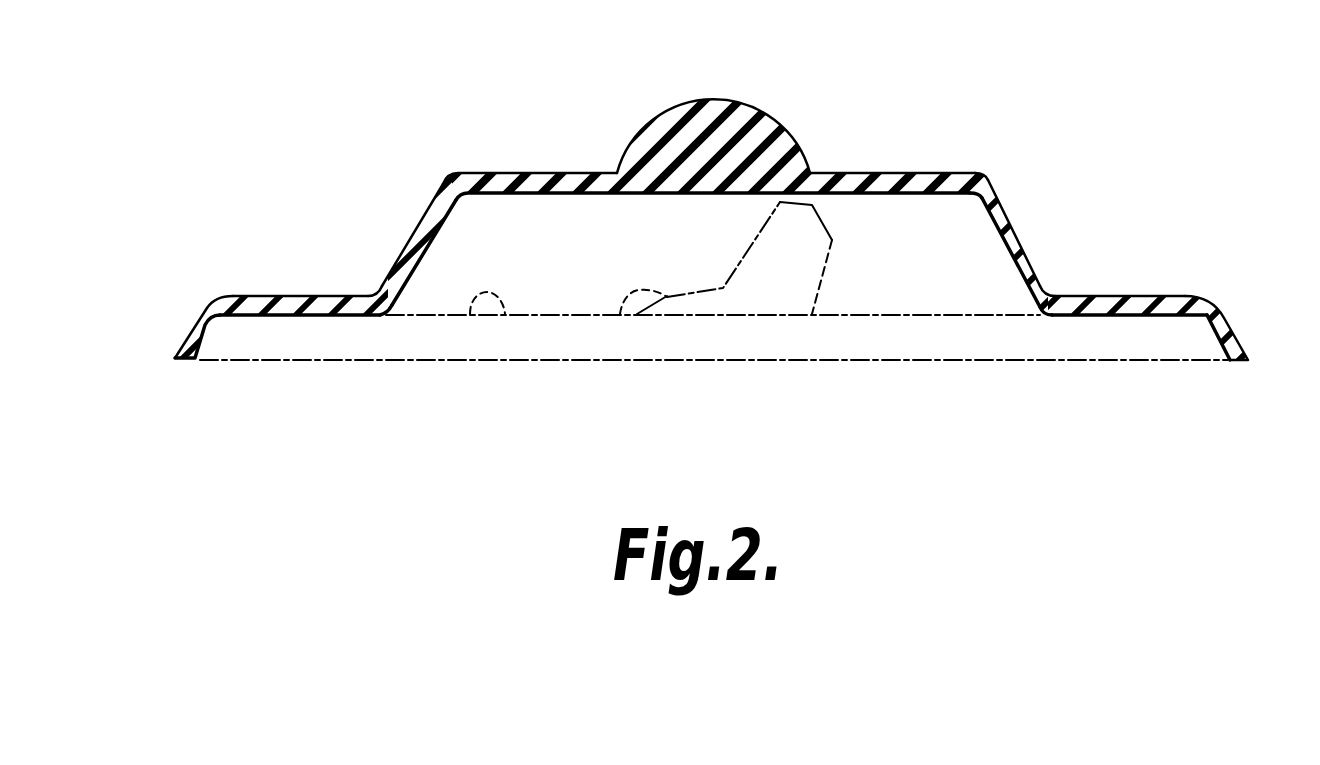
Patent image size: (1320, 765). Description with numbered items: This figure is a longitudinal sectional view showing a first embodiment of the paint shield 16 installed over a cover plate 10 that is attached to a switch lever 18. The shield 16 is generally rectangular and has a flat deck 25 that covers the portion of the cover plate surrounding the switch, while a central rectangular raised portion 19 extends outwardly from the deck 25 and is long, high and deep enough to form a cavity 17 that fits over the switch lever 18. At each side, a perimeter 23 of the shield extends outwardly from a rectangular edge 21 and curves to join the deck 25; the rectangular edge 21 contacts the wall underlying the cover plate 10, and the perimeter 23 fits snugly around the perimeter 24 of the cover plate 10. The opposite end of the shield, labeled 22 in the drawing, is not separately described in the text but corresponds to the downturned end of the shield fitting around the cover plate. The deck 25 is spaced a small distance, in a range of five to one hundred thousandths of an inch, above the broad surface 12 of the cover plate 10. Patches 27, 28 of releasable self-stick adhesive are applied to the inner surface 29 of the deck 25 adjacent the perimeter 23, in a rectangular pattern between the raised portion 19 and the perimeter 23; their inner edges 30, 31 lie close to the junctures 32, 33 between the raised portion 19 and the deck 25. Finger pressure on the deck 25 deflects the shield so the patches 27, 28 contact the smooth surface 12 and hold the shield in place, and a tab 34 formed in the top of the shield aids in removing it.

The cover plate 10 is at (805, 330).
The broad rectangular surface 12 is at (470, 315).
The shield 16 is at (543, 173).
The cavity 17 is at (925, 213).
The switch lever 18 is at (620, 315).
The central rectangular raised portion 19 is at (950, 172).
The rectangular edge 21 is at (413, 227).
The left end 22 is at (190, 334).
The perimeter 23 is at (1240, 340).
The perimeter of cover plate 24 is at (1206, 347).
The flat deck 25 is at (1128, 296).
The adhesive patch 27 is at (316, 316).
The adhesive patch 28 is at (1125, 317).
The inner surface 29 is at (262, 312).
The inner edge 30 is at (390, 318).
The inner edge 31 is at (1058, 317).
The juncture 32 is at (378, 290).
The juncture 33 is at (1040, 296).
The tab 34 is at (731, 118).